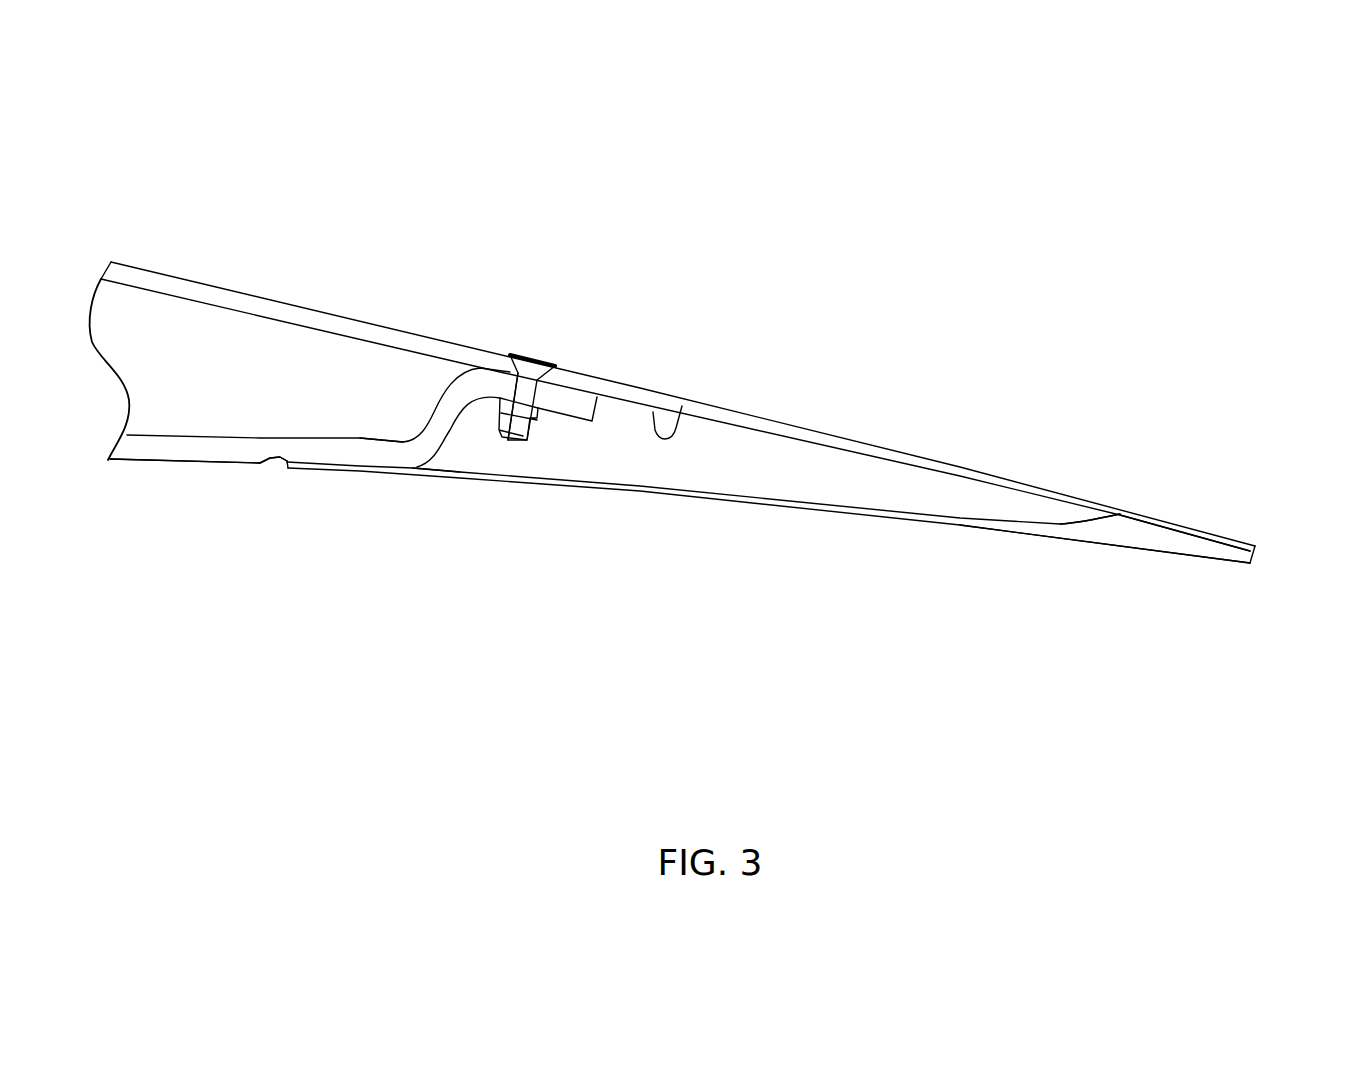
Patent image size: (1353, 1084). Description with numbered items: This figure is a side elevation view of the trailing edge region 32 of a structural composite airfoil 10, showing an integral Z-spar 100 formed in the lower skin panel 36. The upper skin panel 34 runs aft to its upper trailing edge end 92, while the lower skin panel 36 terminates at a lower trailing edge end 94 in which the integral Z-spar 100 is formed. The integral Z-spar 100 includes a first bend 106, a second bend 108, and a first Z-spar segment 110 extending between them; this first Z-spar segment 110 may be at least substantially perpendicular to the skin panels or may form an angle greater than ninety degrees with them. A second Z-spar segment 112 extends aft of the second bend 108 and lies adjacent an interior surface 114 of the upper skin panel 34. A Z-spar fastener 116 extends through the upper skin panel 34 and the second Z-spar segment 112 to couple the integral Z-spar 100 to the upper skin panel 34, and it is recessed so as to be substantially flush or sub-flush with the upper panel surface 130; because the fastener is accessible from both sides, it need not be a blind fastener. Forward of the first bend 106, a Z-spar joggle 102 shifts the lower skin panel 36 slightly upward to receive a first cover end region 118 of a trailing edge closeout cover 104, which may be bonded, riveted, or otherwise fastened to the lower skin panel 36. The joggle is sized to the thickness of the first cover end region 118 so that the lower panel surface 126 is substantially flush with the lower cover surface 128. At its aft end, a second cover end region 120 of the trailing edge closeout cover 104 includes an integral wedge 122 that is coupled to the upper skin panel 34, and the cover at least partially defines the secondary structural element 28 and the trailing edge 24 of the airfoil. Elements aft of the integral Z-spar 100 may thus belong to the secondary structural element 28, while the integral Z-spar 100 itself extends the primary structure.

The structural composite airfoil 10 is at (1153, 210).
The trailing edge 24 is at (1282, 503).
The secondary structural element 28 is at (953, 580).
The trailing edge region 32 is at (210, 353).
The upper skin panel 34 is at (295, 315).
The lower skin panel 36 is at (163, 445).
The upper trailing edge end 92 is at (1188, 503).
The lower trailing edge end 94 is at (587, 445).
The integral Z-spar 100 is at (397, 390).
The Z-spar joggle 102 is at (272, 445).
The trailing edge closeout cover 104 is at (772, 503).
The first bend 106 is at (423, 445).
The second bend 108 is at (470, 383).
The first Z-spar segment 110 is at (443, 402).
The second Z-spar segment 112 is at (498, 383).
The interior surface 114 is at (683, 417).
The Z-spar fastener 116 is at (532, 368).
The first cover end region 118 is at (367, 492).
The second cover end region 120 is at (1102, 560).
The integral wedge 122 is at (1150, 537).
The lower panel surface 126 is at (223, 465).
The lower cover surface 128 is at (475, 477).
The upper panel surface 130 is at (750, 410).